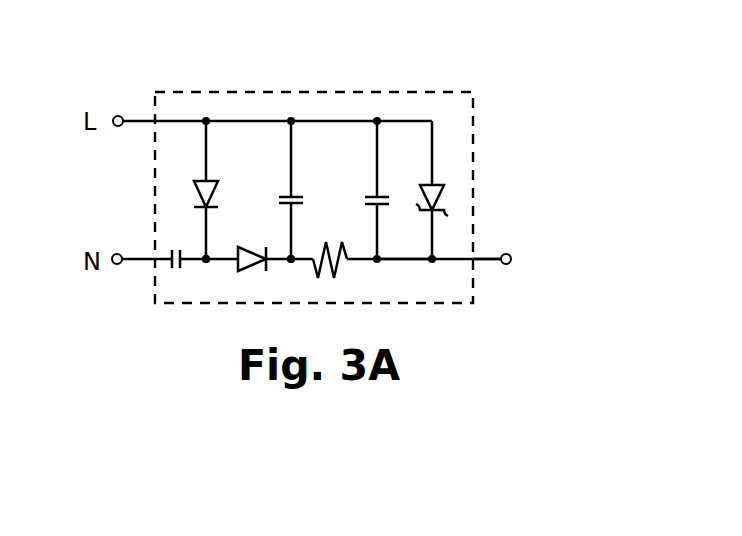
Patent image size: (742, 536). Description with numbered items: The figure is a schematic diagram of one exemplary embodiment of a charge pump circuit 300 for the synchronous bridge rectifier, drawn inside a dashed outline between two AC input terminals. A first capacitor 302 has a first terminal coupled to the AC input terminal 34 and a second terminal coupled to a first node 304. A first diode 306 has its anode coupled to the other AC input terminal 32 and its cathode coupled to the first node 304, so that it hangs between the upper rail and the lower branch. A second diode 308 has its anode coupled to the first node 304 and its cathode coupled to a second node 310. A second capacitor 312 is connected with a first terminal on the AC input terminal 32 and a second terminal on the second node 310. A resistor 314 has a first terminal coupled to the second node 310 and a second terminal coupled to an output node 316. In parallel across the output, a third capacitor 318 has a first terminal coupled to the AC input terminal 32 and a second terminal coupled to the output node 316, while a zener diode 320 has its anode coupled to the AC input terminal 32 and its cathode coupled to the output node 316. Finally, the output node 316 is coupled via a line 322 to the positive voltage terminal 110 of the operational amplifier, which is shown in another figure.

The AC input terminal 32 is at (119, 114).
The AC input terminal 34 is at (117, 265).
The positive voltage terminal 110 is at (507, 253).
The charge pump circuit 300 is at (412, 93).
The first capacitor 302 is at (171, 269).
The first node 304 is at (207, 263).
The first diode 306 is at (219, 193).
The second diode 308 is at (257, 246).
The second node 310 is at (292, 263).
The second capacitor 312 is at (304, 201).
The resistor 314 is at (329, 243).
The output node 316 is at (407, 262).
The third capacitor 318 is at (383, 196).
The zener diode 320 is at (443, 194).
The line 322 is at (485, 262).